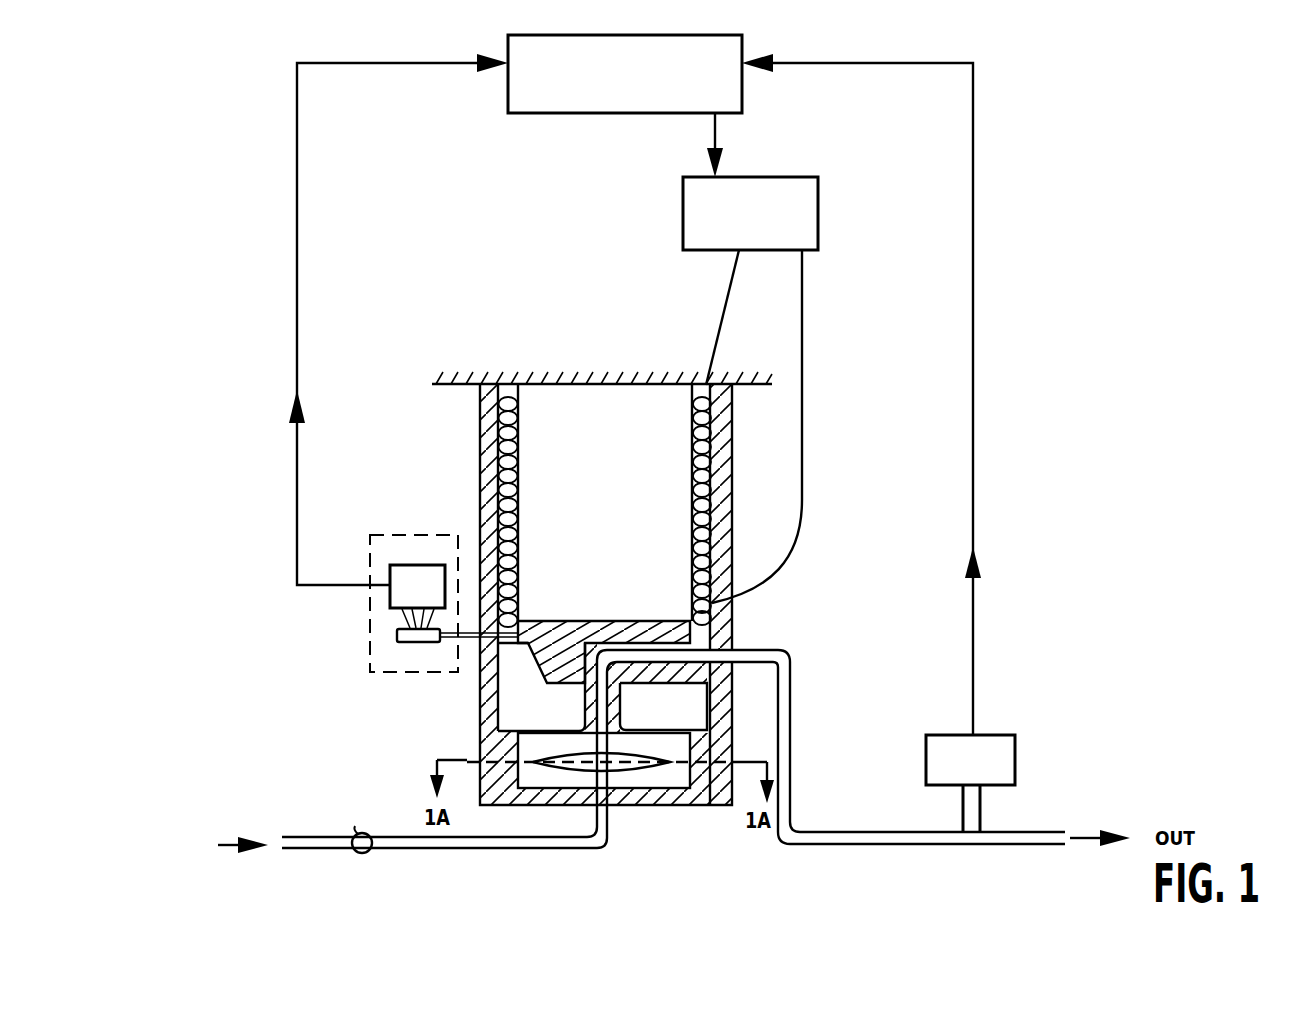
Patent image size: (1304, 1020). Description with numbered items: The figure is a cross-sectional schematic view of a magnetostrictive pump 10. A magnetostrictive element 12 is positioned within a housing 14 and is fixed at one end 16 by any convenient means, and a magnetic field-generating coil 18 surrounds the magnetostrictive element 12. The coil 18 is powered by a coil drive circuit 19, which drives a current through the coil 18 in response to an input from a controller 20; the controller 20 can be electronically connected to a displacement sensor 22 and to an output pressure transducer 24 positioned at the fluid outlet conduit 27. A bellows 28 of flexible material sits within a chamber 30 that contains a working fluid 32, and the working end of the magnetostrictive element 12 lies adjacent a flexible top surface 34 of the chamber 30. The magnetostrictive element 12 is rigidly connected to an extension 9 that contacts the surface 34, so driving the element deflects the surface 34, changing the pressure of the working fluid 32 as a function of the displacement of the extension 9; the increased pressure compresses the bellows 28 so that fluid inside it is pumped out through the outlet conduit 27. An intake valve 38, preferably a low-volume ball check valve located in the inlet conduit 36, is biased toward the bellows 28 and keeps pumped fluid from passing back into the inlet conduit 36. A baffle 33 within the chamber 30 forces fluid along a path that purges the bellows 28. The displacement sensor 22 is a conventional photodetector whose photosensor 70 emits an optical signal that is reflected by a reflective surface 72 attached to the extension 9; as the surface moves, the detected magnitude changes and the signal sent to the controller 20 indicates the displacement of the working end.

The extension 9 is at (622, 713).
The pump 10 is at (450, 497).
The magnetostrictive element 12 is at (591, 508).
The housing 14 is at (631, 594).
The fixed end 16 is at (527, 384).
The magnetic field-generating coil 18 is at (637, 512).
The coil drive circuit 19 is at (690, 237).
The controller 20 is at (531, 100).
The displacement sensor 22 is at (378, 673).
The output pressure transducer 24 is at (1003, 753).
The fluid outlet conduit 27 is at (790, 745).
The bellows 28 is at (637, 767).
The chamber 30 is at (712, 742).
The working fluid 32 is at (670, 778).
The baffle 33 is at (573, 767).
The flexible top surface 34 is at (543, 728).
The inlet conduit 36 is at (307, 848).
The intake valve 38 is at (367, 853).
The photosensor 70 is at (390, 582).
The reflective surface 72 is at (416, 645).